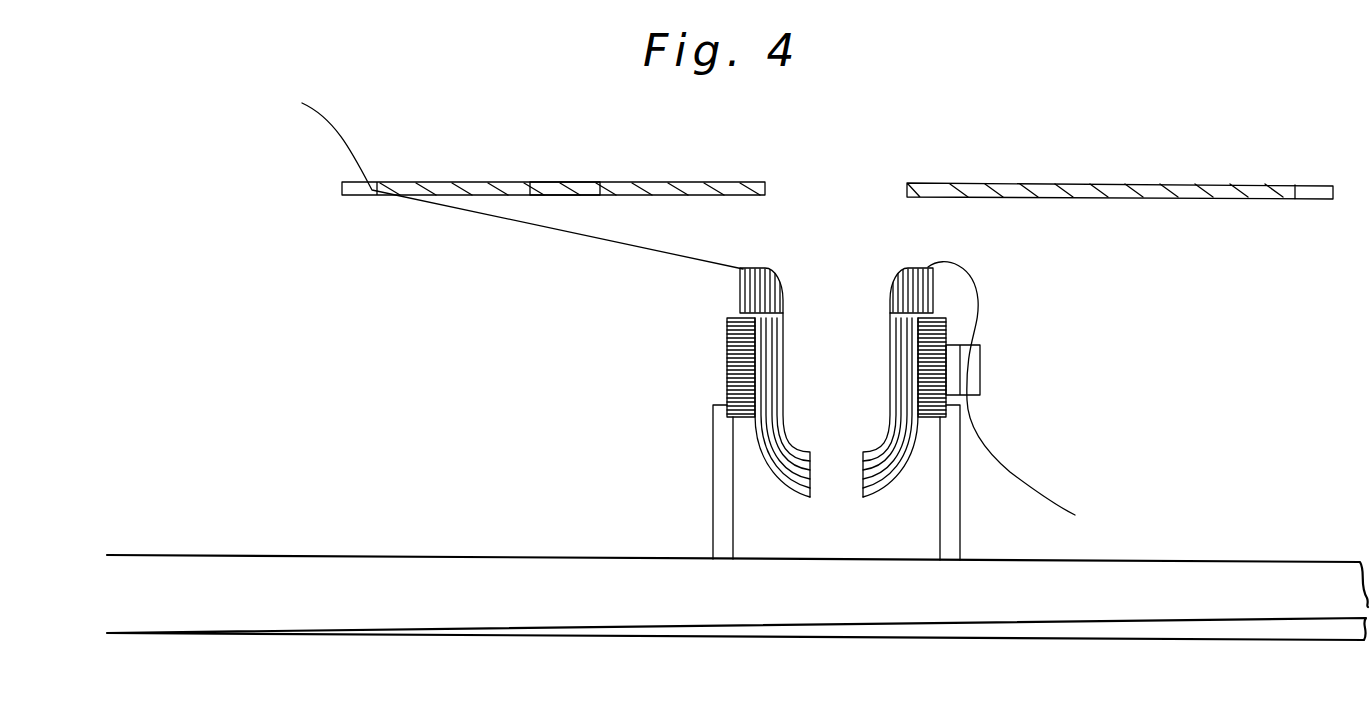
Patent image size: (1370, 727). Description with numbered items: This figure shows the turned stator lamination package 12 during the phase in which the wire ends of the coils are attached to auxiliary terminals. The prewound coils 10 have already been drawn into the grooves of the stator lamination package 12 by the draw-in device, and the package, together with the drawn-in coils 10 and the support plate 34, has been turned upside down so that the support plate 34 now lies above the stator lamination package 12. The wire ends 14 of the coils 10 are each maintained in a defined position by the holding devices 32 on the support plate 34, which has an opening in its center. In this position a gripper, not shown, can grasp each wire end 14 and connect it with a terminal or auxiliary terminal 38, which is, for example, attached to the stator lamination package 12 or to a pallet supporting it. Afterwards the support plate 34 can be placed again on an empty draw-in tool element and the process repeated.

The coil 10 is at (772, 473).
The stator lamination package 12 is at (727, 367).
The wire end 14 is at (549, 228).
The holding device 32 is at (341, 183).
The support plate 34 is at (546, 190).
The auxiliary terminal 38 is at (977, 378).